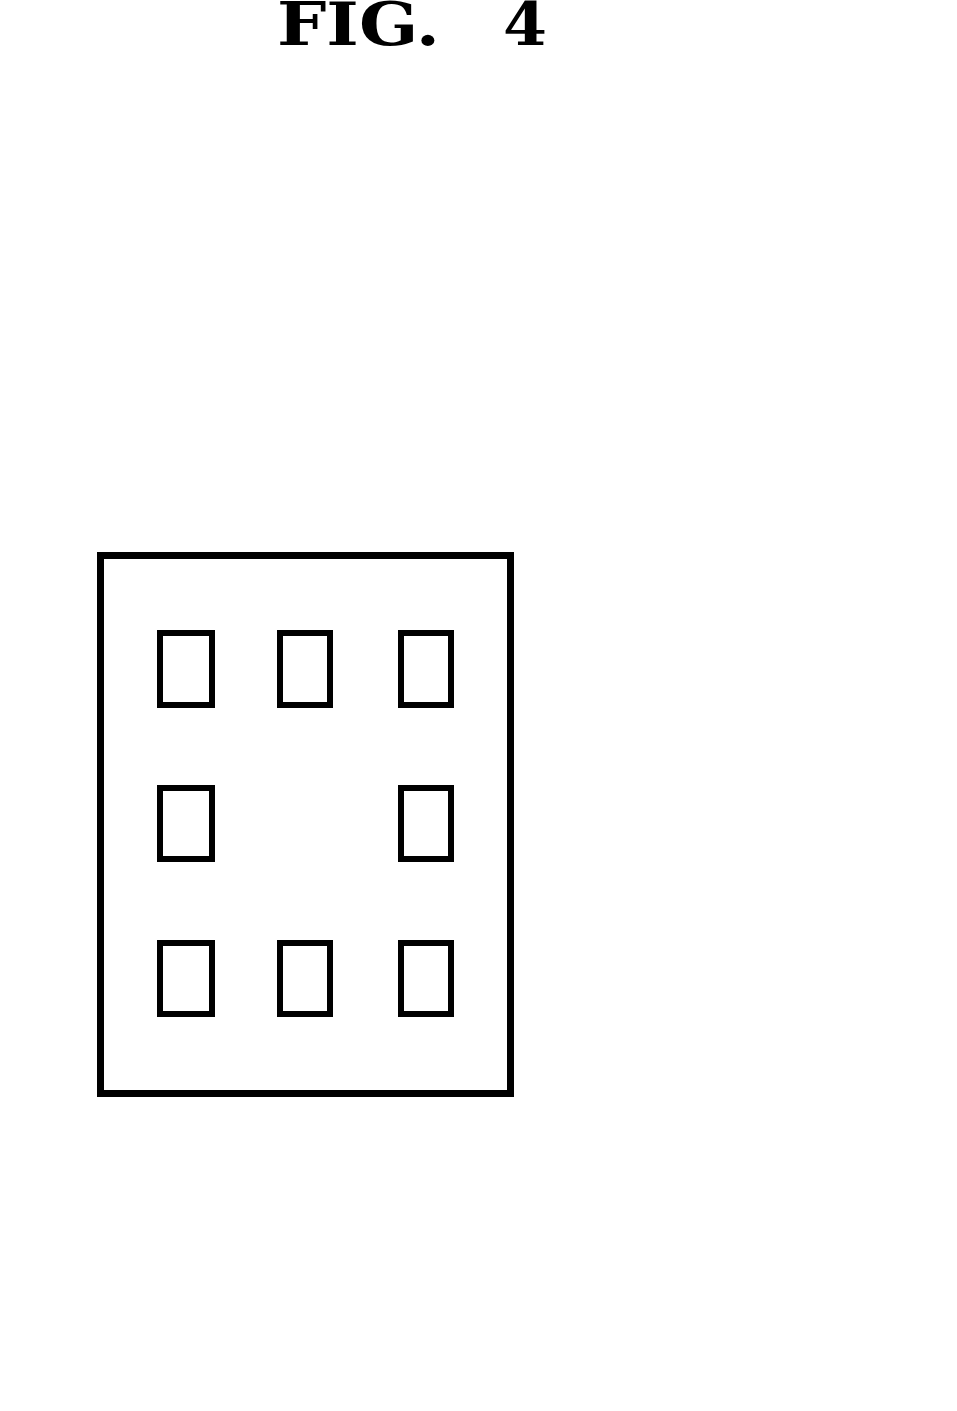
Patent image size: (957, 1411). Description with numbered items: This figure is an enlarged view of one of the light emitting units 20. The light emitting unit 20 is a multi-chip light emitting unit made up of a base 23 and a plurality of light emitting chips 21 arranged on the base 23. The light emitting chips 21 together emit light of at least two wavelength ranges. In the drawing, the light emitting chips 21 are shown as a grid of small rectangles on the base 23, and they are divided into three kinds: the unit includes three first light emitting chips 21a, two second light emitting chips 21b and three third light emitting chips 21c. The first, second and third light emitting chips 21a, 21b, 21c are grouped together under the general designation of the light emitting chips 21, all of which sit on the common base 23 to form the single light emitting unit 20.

The light emitting unit 20 is at (192, 1139).
The base 23 is at (277, 578).
The light emitting chips 21 is at (632, 825).
The first light emitting chips 21a is at (437, 669).
The second light emitting chips 21b is at (437, 823).
The third light emitting chips 21c is at (568, 988).